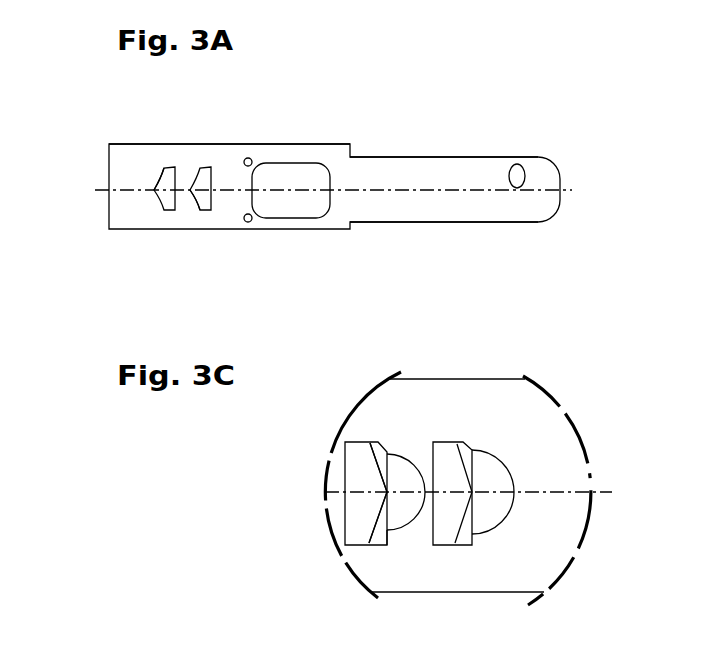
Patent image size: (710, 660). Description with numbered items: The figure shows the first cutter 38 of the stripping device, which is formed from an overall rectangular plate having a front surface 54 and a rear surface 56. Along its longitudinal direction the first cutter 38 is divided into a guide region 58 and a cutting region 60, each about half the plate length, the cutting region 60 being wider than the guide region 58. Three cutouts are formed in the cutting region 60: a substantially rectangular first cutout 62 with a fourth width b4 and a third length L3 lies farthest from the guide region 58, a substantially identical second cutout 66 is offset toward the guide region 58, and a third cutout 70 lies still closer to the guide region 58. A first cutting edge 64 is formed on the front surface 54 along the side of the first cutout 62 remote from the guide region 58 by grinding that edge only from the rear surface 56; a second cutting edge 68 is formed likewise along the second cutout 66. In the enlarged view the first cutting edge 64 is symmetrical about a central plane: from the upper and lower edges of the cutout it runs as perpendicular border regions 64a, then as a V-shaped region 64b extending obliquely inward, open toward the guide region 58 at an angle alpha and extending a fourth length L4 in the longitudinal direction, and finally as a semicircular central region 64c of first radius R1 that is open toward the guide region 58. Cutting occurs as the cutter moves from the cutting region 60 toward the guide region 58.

In FIG. 3A, the first cutter 38 is at (380, 130).
In FIG. 3C, the first cutter 38 is at (433, 378).
In FIG. 3A, the front surface 54 is at (442, 197).
In FIG. 3C, the rear surface 56 is at (523, 565).
In FIG. 3A, the guide region 58 is at (470, 157).
In FIG. 3A, the cutting region 60 is at (261, 144).
In FIG. 3A, the first cutout 62 is at (164, 167).
In FIG. 3C, the first cutout 62 is at (346, 450).
In FIG. 3A, the first cutting edge 64 is at (157, 210).
In FIG. 3C, the first cutting edge 64 is at (372, 440).
In FIG. 3C, the border region 64a is at (358, 468).
In FIG. 3C, the V-shaped region 64b is at (391, 445).
In FIG. 3C, the semicircular central region 64c is at (390, 535).
In FIG. 3A, the second cutout 66 is at (206, 167).
In FIG. 3C, the second cutout 66 is at (447, 535).
In FIG. 3A, the second cutting edge 68 is at (196, 210).
In FIG. 3C, the second cutting edge 68 is at (477, 447).
In FIG. 3A, the third cutout 70 is at (291, 173).
In FIG. 3C, the first radius R1 is at (389, 491).
In FIG. 3C, the fourth width b4 is at (382, 545).
In FIG. 3C, the third length L3 is at (345, 545).
In FIG. 3C, the fourth length L4 is at (370, 545).